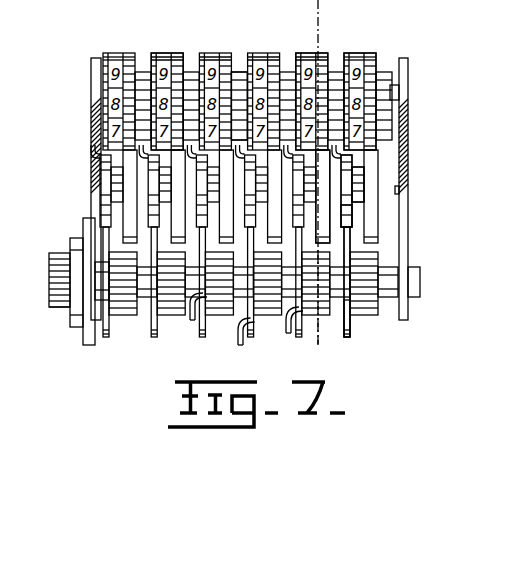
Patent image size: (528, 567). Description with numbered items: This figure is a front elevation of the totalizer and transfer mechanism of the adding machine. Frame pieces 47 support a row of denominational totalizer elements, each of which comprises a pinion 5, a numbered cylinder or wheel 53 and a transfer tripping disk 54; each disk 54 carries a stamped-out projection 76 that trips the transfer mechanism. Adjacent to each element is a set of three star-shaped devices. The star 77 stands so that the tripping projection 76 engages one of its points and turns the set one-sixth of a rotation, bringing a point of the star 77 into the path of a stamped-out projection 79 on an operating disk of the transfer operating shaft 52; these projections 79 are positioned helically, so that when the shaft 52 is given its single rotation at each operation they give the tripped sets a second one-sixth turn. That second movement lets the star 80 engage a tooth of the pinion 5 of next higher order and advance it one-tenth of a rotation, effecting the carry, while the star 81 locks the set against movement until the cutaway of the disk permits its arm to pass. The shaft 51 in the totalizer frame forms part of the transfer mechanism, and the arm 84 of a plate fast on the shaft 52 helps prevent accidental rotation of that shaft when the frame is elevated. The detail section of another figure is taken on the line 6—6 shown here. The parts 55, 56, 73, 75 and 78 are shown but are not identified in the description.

The pinion 5 is at (177, 53).
The hub 55 is at (238, 72).
The transfer tripping disk 54 is at (297, 57).
The numbered cylinder or wheel 53 is at (358, 54).
The side plate 56 is at (399, 58).
The star 77 is at (332, 172).
The frame pieces 47 is at (352, 181).
The star-shaped element 81 is at (364, 186).
The stop 75 is at (403, 190).
The pawl arm 78 is at (352, 220).
The star element 80 is at (350, 240).
The shaft 51 is at (420, 278).
The transfer operating shaft 52 is at (350, 338).
The section line 6 is at (318, 345).
The transfer projection 79 is at (288, 323).
The plate arm 84 is at (89, 330).
The gear 73 is at (78, 313).
The transfer tripping projection 76 is at (91, 147).